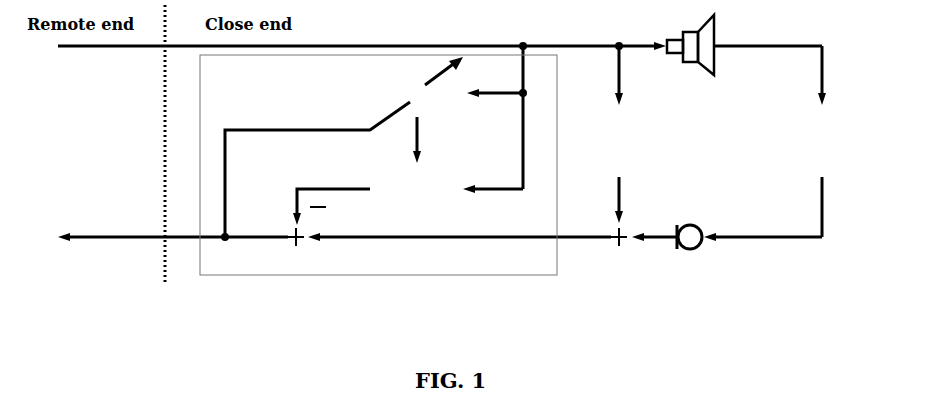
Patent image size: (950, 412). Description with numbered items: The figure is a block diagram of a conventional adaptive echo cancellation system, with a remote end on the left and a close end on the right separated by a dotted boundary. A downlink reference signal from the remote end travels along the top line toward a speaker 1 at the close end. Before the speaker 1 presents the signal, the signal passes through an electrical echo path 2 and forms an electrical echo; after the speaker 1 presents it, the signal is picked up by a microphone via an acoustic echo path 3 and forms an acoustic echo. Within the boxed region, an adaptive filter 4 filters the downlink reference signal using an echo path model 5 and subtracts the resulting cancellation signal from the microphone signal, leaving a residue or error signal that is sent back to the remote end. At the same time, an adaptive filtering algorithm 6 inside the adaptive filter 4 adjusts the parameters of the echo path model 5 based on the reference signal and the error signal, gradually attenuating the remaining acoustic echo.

The speaker 1 is at (716, 30).
The electrical echo path 2 is at (618, 134).
The acoustic echo path 3 is at (765, 143).
The adaptive filter 4 is at (558, 78).
The echo path model 5 is at (466, 189).
The adaptive filtering algorithm 6 is at (344, 147).